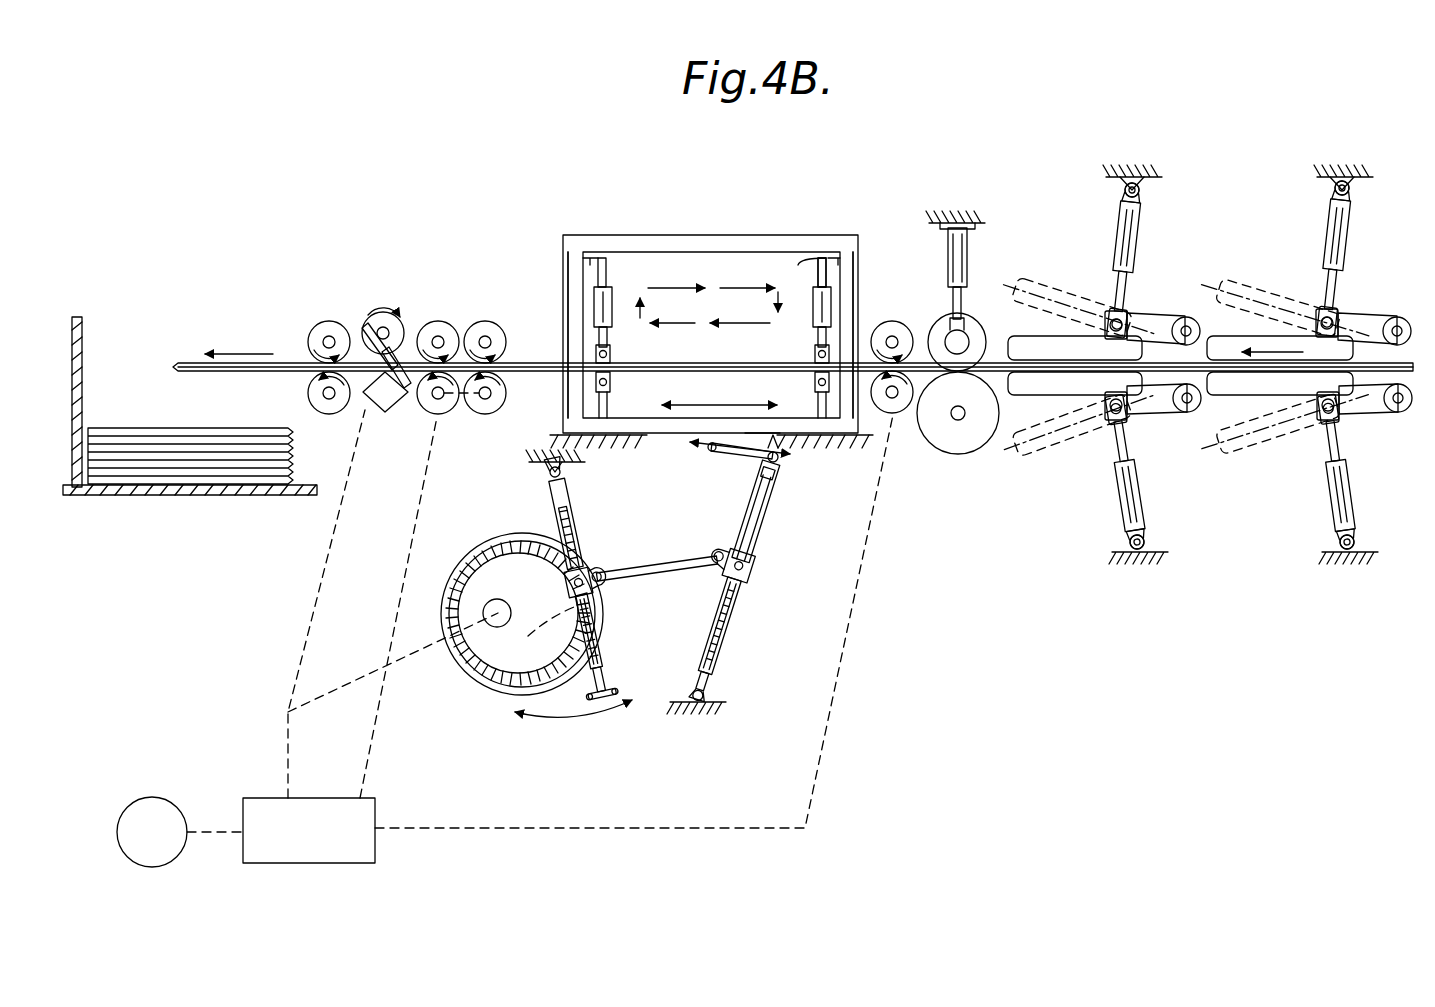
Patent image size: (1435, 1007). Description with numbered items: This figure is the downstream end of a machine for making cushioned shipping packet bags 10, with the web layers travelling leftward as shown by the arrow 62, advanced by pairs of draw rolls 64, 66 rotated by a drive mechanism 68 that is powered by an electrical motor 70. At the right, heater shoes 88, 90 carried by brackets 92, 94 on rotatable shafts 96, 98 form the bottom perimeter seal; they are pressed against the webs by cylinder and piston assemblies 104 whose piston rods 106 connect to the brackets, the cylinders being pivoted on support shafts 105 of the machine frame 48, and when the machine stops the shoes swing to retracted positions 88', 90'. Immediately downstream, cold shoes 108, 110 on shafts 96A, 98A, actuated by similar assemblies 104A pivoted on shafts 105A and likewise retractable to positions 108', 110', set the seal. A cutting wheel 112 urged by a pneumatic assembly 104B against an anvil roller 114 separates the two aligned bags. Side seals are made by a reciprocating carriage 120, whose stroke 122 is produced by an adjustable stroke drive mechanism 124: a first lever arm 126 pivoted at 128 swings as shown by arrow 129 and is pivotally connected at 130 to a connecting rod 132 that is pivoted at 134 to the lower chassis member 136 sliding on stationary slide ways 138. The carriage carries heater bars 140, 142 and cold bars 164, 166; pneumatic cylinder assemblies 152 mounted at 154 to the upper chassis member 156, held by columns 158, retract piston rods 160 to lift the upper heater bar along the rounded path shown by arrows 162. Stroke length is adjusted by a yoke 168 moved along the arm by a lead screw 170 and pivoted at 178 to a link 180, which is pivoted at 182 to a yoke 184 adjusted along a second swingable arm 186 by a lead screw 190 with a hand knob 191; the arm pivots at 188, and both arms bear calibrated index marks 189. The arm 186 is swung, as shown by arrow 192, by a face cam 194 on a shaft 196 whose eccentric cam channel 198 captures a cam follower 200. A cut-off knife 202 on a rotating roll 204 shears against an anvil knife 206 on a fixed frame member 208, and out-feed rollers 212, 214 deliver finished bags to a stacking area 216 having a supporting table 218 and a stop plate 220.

The packet bag 10 is at (182, 360).
The machine frame 48 is at (545, 460).
The web travel arrow 62 is at (1275, 350).
The draw rolls 64 is at (485, 320).
The draw rolls 66 is at (487, 400).
The drive mechanism 68 is at (258, 798).
The electrical motor 70 is at (150, 797).
The heater shoe 88 is at (1280, 334).
The retracted position of heater shoe 88' is at (1285, 290).
The heater shoe 90 is at (1279, 393).
The retracted position of heater shoe 90' is at (1285, 438).
The bracket 92 is at (1165, 315).
The bracket 94 is at (1165, 412).
The rotatable shaft 96 is at (1400, 316).
The rotatable shaft 96A is at (1190, 316).
The rotatable shaft 98 is at (1400, 412).
The rotatable shaft 98A is at (1190, 412).
The cylinder and piston assembly 104 is at (1350, 226).
The cylinder and piston assembly 104A is at (1140, 225).
The pneumatic cylinder and piston assembly 104B is at (968, 250).
The support shaft 105 is at (1350, 189).
The support shaft 105A is at (1142, 190).
The piston rod 106 is at (962, 300).
The cold shoe 108 is at (1067, 336).
The retracted position of cold shoe 108' is at (1080, 292).
The cold shoe 110 is at (1071, 393).
The retracted position of cold shoe 110' is at (1080, 445).
The cutting wheel 112 is at (940, 318).
The anvil roller 114 is at (970, 455).
The reciprocating carriage 120 is at (794, 185).
The stroke arrow 122 is at (700, 400).
The adjustable stroke drive mechanism 124 is at (472, 702).
The first lever arm 126 is at (768, 500).
The pivot 128 is at (708, 694).
The curved arrow 129 is at (760, 455).
The pivotal connection 130 is at (782, 458).
The connecting rod 132 is at (750, 452).
The pivotal connection 134 is at (730, 448).
The lower chassis member 136 is at (700, 446).
The slide ways 138 is at (548, 437).
The upper heater bar 140 is at (813, 350).
The lower heater bar 142 is at (814, 381).
The pneumatic cylinder and piston assembly 152 is at (594, 299).
The cylinder mounting 154 is at (790, 258).
The upper chassis member 156 is at (690, 234).
The columns 158 is at (562, 267).
The piston rods 160 is at (815, 320).
The heater bar path arrows 162 is at (692, 284).
The cold bar 164 is at (612, 352).
The cold bar 166 is at (612, 386).
The movable yoke 168 is at (752, 568).
The lead screw 170 is at (748, 592).
The pivotal connection 178 is at (718, 552).
The link 180 is at (655, 566).
The pivotal connection 182 is at (600, 570).
The yoke 184 is at (595, 585).
The second swingable arm 186 is at (602, 668).
The pivot 188 is at (552, 500).
The calibrated index marks 189 is at (601, 522).
The lead screw 190 is at (598, 640).
The hand knob 191 is at (612, 692).
The curved arrow 192 is at (565, 720).
The face cam 194 is at (505, 540).
The rotatable shaft 196 is at (502, 600).
The eccentric cam channel 198 is at (480, 568).
The cam follower 200 is at (546, 625).
The cut-off knife 202 is at (363, 325).
The rotating roll 204 is at (382, 312).
The anvil knife 206 is at (372, 410).
The fixed frame member 208 is at (405, 400).
The out-feed roller 212 is at (323, 320).
The out-feed roller 214 is at (320, 400).
The stacking area 216 is at (170, 288).
The supporting table 218 is at (188, 480).
The fence or stop plate 220 is at (80, 318).